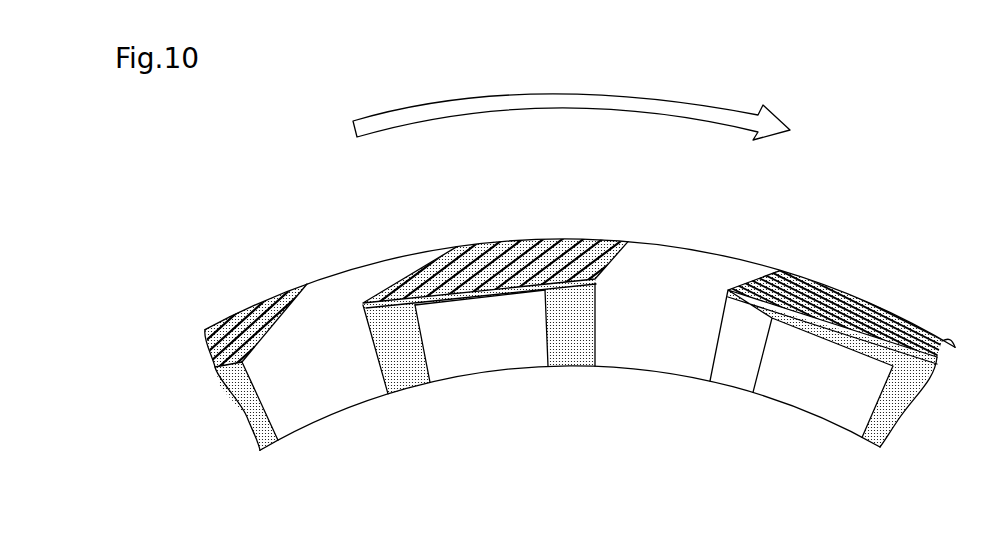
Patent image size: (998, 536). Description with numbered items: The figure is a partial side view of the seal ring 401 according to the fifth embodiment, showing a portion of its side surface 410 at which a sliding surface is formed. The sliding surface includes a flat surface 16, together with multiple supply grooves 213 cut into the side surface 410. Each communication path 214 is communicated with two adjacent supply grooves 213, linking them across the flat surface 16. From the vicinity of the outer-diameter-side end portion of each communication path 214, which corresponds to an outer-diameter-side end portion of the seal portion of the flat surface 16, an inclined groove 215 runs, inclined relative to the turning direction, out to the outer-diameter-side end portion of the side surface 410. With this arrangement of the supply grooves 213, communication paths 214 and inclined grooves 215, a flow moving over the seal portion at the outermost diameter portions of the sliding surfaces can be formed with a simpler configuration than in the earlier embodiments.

The seal ring 401 is at (322, 241).
The side surface 410 is at (327, 377).
The flat surface 16 is at (468, 280).
The inclined groove 215 is at (566, 268).
The supply groove 213 is at (423, 343).
The communication path 214 is at (503, 288).